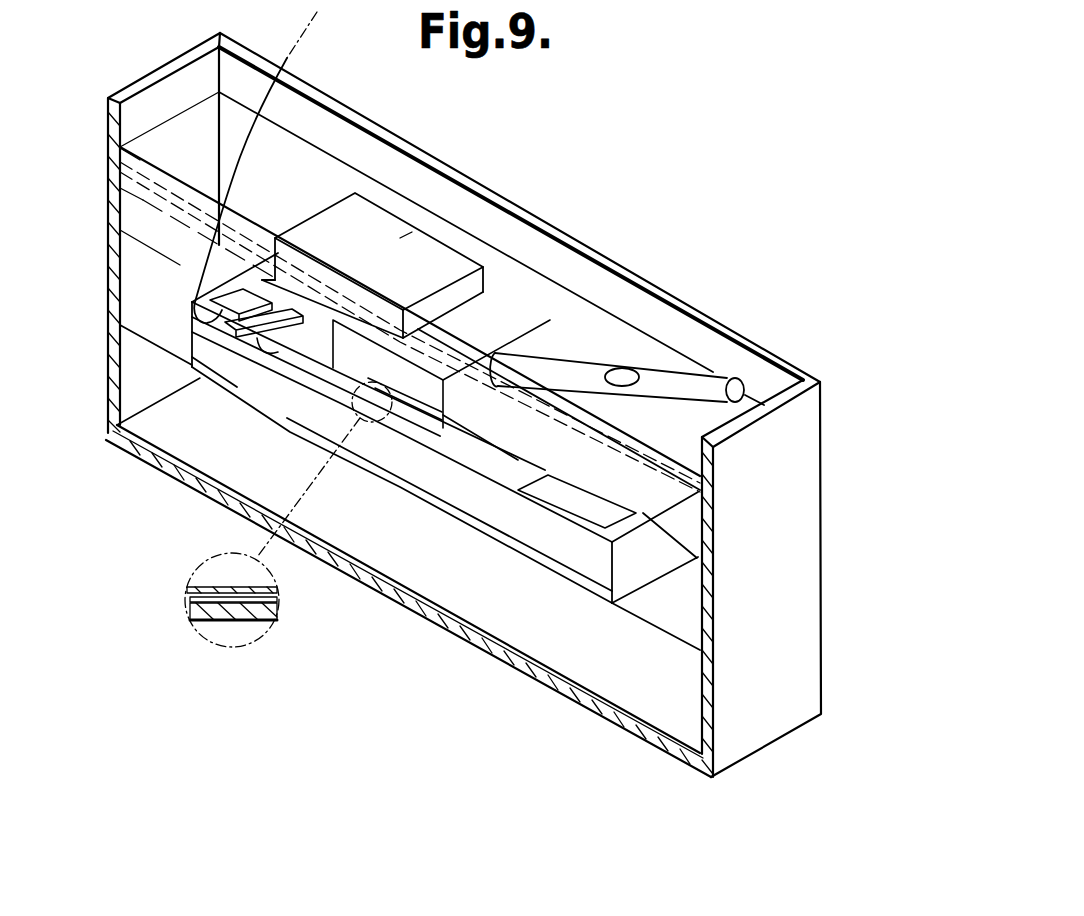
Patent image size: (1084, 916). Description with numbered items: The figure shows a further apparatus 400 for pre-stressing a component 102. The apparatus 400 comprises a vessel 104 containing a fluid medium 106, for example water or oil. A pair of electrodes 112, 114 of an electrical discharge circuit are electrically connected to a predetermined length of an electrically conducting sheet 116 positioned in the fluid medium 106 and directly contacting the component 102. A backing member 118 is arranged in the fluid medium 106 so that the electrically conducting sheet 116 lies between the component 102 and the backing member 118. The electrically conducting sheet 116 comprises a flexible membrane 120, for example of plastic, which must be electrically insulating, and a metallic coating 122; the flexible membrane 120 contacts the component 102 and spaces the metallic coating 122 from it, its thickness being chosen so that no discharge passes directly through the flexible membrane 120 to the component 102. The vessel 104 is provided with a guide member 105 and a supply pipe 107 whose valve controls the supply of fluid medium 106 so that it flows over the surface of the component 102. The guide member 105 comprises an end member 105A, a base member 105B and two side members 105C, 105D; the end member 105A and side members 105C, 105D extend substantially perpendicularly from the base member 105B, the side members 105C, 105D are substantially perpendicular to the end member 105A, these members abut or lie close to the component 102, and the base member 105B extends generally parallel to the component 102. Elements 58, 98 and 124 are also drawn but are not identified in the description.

The sensor assembly 58 is at (662, 240).
The optical fiber tube 98 is at (387, 97).
The component 102 is at (683, 528).
The vessel 104 is at (717, 612).
The guide member 105 is at (515, 322).
The end member 105A is at (538, 338).
The base member 105B is at (500, 307).
The side member 105C is at (397, 43).
The side member 105D is at (527, 312).
The fluid medium 106 is at (663, 694).
The supply pipe 107 is at (716, 372).
The electrode 112 is at (125, 445).
The electrode 114 is at (250, 325).
The electrically conducting sheet 116 is at (603, 457).
The backing member 118 is at (410, 233).
The flexible membrane 120 is at (197, 622).
The metallic coating 122 is at (190, 597).
The top layer 124 is at (195, 582).
The apparatus 400 is at (766, 339).